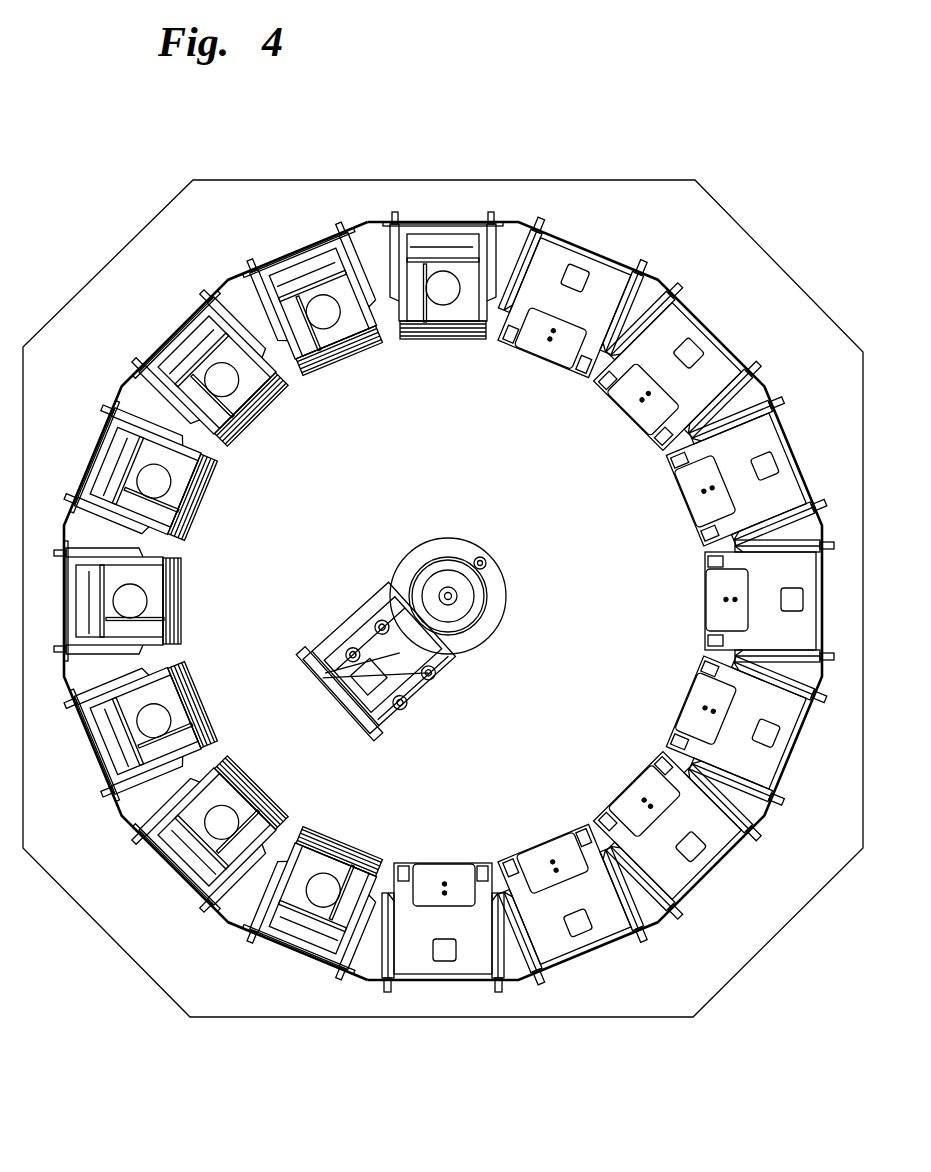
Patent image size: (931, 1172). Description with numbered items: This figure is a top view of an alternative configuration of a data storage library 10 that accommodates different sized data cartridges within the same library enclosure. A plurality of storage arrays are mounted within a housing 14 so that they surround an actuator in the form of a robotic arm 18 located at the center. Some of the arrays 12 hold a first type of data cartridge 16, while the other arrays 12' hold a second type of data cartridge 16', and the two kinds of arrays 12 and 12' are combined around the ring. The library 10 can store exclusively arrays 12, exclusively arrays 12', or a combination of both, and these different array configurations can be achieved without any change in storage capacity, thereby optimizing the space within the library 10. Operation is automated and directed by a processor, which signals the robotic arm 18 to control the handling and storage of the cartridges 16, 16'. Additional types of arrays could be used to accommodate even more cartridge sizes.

The data storage library 10 is at (593, 125).
The storage array 12 is at (595, 673).
The storage array 12' is at (210, 673).
The housing 14 is at (717, 256).
The data cartridge 16 is at (673, 807).
The data cartridge 16' is at (239, 831).
The robotic arm 18 is at (452, 652).